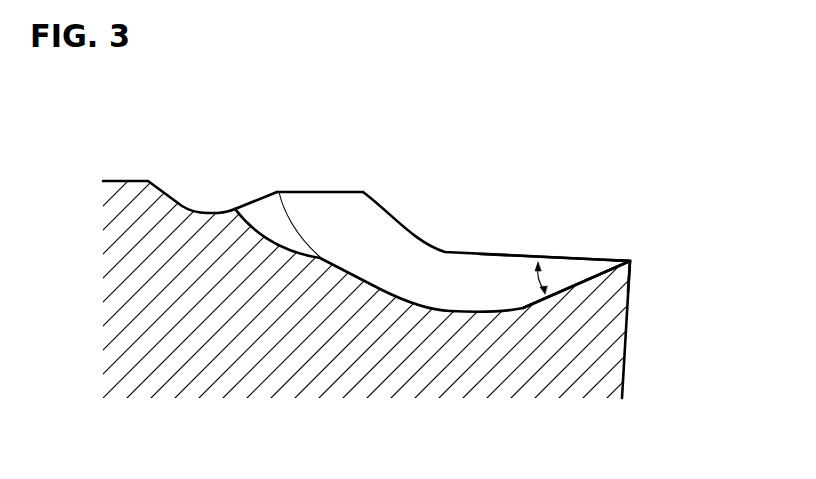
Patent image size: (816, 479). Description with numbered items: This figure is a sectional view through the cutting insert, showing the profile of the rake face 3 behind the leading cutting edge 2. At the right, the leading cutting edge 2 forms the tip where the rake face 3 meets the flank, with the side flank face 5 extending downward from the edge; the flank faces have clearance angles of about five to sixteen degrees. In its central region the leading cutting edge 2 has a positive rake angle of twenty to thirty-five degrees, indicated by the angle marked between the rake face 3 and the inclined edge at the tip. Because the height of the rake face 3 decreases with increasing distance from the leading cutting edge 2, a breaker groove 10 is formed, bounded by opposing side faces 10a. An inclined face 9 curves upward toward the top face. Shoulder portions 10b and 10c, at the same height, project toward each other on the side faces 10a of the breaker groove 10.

The leading cutting edge 2 is at (632, 260).
The rake face 3 is at (589, 281).
The side flank face 5 is at (627, 343).
The inclined face 9 is at (563, 257).
The breaker groove 10 is at (417, 304).
The side face of the breaker groove 10a is at (443, 260).
The shoulder portion 10b is at (370, 200).
The shoulder portion 10c is at (279, 192).